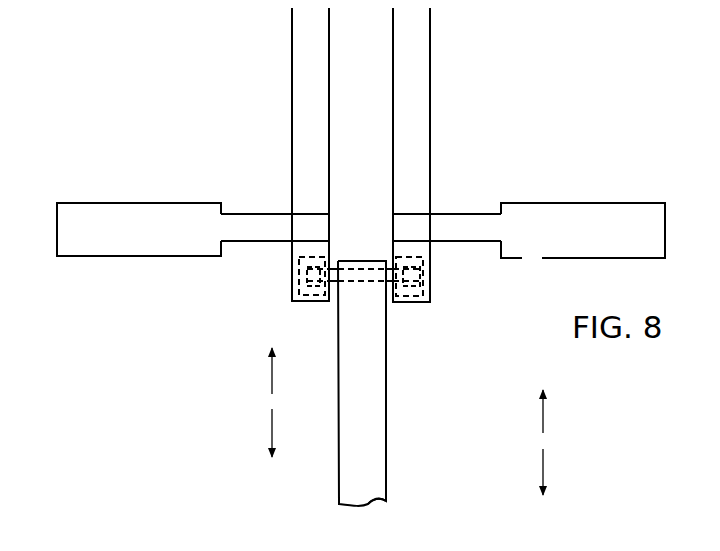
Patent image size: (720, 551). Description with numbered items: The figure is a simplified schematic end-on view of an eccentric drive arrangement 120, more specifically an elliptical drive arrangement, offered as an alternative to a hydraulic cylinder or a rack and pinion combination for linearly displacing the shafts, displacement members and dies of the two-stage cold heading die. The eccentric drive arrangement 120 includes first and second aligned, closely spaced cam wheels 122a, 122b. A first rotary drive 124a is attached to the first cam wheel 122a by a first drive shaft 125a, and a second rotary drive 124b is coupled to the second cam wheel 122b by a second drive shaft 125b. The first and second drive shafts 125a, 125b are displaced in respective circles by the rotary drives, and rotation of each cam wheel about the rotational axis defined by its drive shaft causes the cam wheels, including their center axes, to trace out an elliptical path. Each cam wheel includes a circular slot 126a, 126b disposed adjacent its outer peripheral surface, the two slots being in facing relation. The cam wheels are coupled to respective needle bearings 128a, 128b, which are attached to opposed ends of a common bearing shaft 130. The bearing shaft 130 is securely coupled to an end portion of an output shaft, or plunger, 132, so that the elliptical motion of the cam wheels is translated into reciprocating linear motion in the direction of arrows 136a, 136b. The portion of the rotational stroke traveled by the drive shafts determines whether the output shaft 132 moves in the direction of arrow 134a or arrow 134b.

The eccentric drive arrangement 120 is at (199, 278).
The first cam wheel 122a is at (296, 105).
The second cam wheel 122b is at (406, 128).
The first rotary drive 124a is at (199, 195).
The second rotary drive 124b is at (499, 195).
The first drive shaft 125a is at (253, 219).
The second drive shaft 125b is at (441, 205).
The circular slot 126a is at (298, 287).
The circular slot 126b is at (404, 289).
The needle bearing 128a is at (299, 279).
The needle bearing 128b is at (412, 278).
The bearing shaft 130 is at (349, 275).
The output shaft 132 is at (379, 373).
The arrow 134a is at (262, 375).
The arrow 134b is at (268, 412).
The arrow 136a is at (536, 405).
The arrow 136b is at (536, 463).